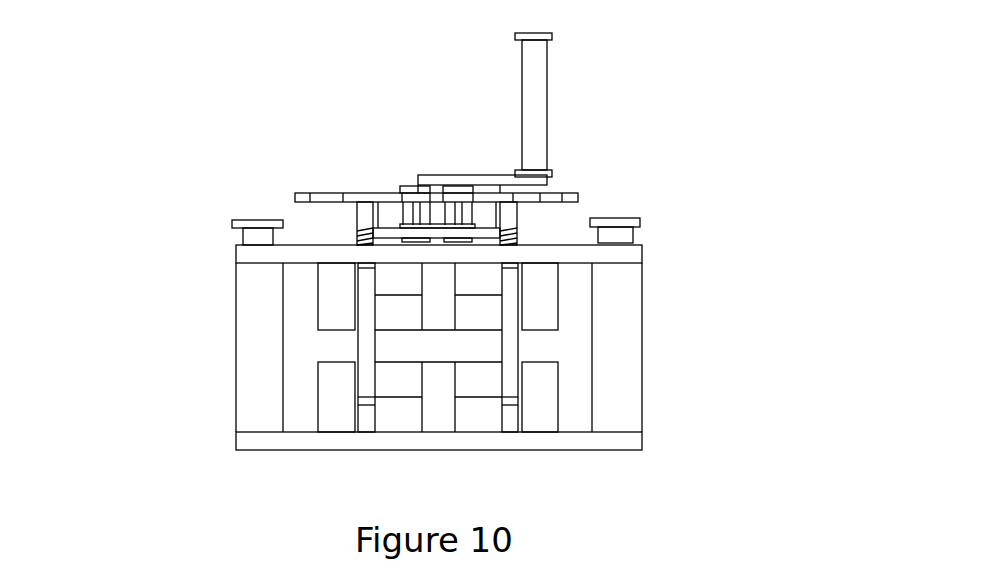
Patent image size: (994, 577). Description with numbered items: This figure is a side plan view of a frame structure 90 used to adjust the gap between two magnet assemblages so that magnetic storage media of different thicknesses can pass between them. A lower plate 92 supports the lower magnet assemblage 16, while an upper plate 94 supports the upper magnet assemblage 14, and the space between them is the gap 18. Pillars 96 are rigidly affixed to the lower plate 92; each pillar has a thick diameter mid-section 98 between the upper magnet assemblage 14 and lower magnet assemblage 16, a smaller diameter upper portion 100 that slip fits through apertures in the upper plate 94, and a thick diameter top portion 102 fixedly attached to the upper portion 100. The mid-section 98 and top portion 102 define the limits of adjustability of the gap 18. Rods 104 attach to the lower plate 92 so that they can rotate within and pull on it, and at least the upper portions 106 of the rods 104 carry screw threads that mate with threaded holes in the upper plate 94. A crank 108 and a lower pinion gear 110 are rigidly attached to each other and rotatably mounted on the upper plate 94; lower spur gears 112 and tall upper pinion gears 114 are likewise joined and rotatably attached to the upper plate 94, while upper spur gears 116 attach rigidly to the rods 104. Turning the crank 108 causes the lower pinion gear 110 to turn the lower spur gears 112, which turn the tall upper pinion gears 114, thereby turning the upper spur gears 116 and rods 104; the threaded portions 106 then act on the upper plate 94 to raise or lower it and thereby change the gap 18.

The upper magnet assemblage 14 is at (310, 290).
The lower magnet assemblage 16 is at (310, 395).
The gap 18 is at (558, 345).
The frame structure 90 is at (708, 297).
The lower plate 92 is at (252, 441).
The upper plate 94 is at (247, 252).
The pillars 96 is at (222, 357).
The thick diameter mid-section 98 is at (245, 321).
The smaller diameter upper portion 100 is at (245, 240).
The thick diameter top portion 102 is at (250, 223).
The rods 104 is at (365, 408).
The threaded upper portions 106 is at (357, 233).
The crank 108 is at (538, 95).
The lower pinion gear 110 is at (405, 223).
The lower spur gears 112 is at (450, 233).
The tall upper pinion gears 114 is at (440, 203).
The upper spur gears 116 is at (318, 198).